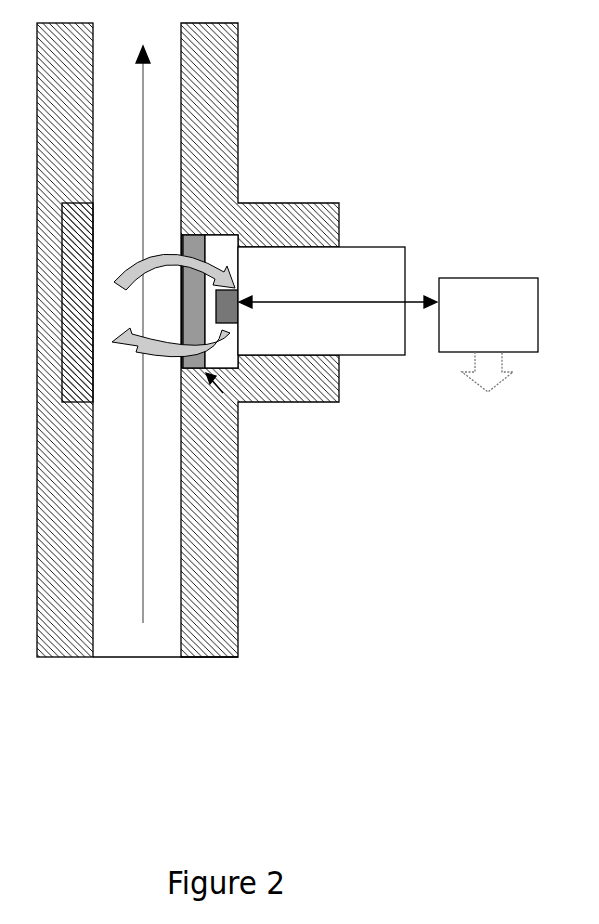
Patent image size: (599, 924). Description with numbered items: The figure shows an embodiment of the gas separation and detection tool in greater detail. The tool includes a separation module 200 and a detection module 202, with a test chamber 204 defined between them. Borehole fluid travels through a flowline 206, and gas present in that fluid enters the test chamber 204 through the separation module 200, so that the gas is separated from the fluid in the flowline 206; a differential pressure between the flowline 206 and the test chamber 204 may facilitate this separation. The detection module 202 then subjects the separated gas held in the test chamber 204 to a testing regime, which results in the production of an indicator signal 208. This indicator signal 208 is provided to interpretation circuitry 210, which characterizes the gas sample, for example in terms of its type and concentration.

The separation module 200 is at (235, 403).
The detection module 202 is at (238, 278).
The test chamber 204 is at (237, 276).
The flowline 206 is at (136, 551).
The indicator signal 208 is at (337, 301).
The interpretation circuitry 210 is at (494, 337).